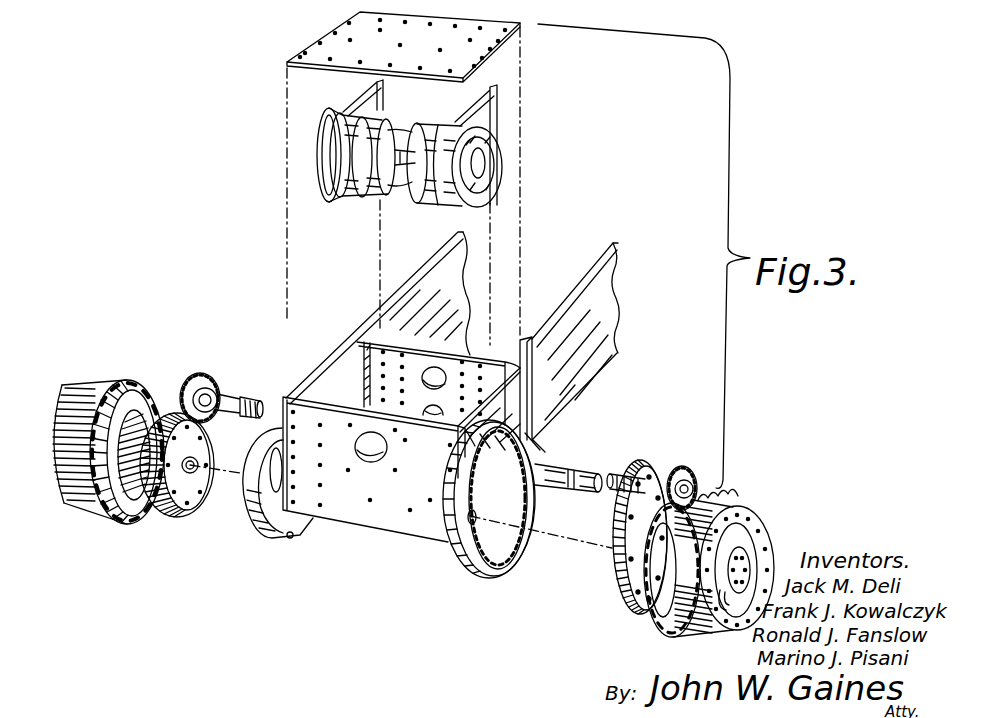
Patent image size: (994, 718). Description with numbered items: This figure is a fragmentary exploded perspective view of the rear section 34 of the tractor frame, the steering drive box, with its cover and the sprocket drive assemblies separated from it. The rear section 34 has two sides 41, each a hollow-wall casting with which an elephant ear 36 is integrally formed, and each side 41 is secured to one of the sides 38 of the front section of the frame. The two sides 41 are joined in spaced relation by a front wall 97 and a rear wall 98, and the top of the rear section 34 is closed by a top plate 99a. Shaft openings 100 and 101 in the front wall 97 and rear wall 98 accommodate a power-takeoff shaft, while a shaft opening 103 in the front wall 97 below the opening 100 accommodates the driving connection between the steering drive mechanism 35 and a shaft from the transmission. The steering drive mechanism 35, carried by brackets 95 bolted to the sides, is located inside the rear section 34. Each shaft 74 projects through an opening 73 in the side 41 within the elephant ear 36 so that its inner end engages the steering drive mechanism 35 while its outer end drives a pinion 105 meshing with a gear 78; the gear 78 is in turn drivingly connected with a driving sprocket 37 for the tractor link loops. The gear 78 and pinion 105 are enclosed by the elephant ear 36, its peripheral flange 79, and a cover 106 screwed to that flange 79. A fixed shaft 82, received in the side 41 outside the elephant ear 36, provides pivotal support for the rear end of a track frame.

The top plate 99a is at (330, 33).
The brackets 95 is at (373, 97).
The steering drive mechanism 35 is at (490, 152).
The rear section 34 is at (477, 404).
The rear wall 98 is at (370, 523).
The side 41 is at (340, 343).
The front wall 97 is at (463, 347).
The shaft opening 100 is at (437, 368).
The shaft opening 103 is at (435, 418).
The shaft opening 101 is at (360, 443).
The side 38 is at (617, 348).
The opening 73 is at (530, 437).
The elephant ear 36 is at (386, 518).
The peripheral flange 79 is at (270, 537).
The driving sprocket 37 is at (130, 387).
The gear 78 is at (185, 515).
The cover 106 is at (160, 513).
The pinion 105 is at (208, 373).
The shaft 74 is at (225, 397).
The fixed shaft 82 is at (583, 470).